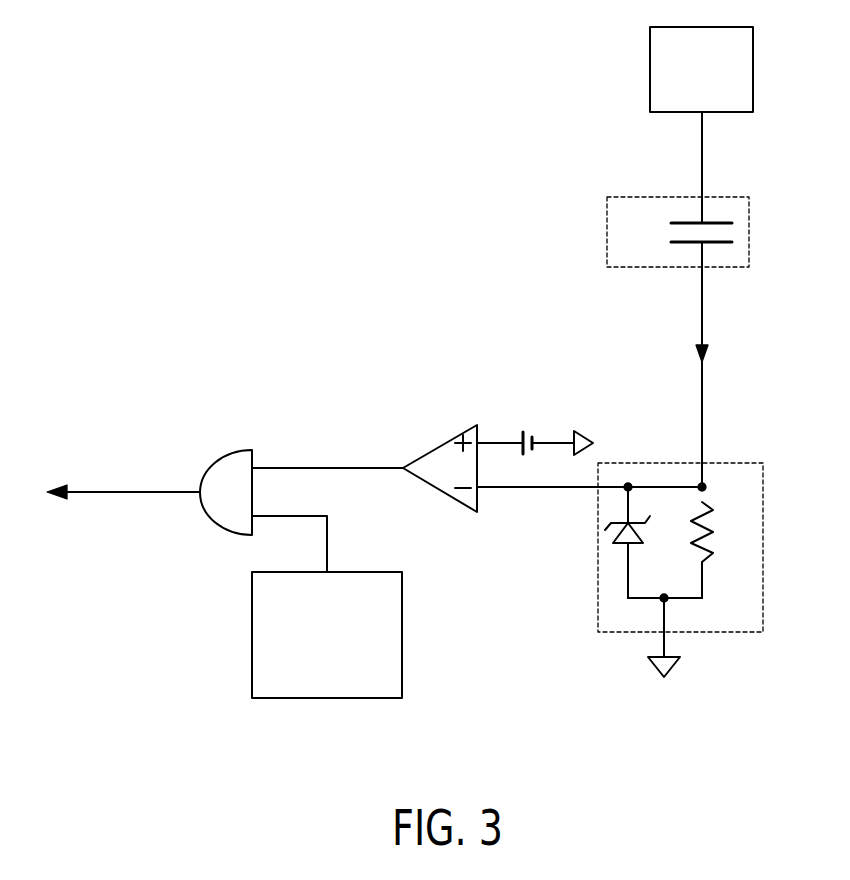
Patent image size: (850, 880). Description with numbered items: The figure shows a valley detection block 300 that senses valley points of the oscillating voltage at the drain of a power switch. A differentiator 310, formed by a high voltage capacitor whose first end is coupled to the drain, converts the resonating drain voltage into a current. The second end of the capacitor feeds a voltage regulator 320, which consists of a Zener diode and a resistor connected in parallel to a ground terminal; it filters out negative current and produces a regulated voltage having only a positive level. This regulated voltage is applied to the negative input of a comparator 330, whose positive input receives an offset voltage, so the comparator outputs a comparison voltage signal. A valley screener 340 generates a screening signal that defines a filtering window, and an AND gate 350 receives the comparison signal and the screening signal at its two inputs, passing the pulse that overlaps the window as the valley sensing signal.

The valley detection block 300 is at (308, 73).
The differentiator 310 is at (610, 197).
The voltage regulator 320 is at (763, 600).
The comparator 330 is at (432, 446).
The valley screener 340 is at (402, 672).
The AND gate 350 is at (222, 453).